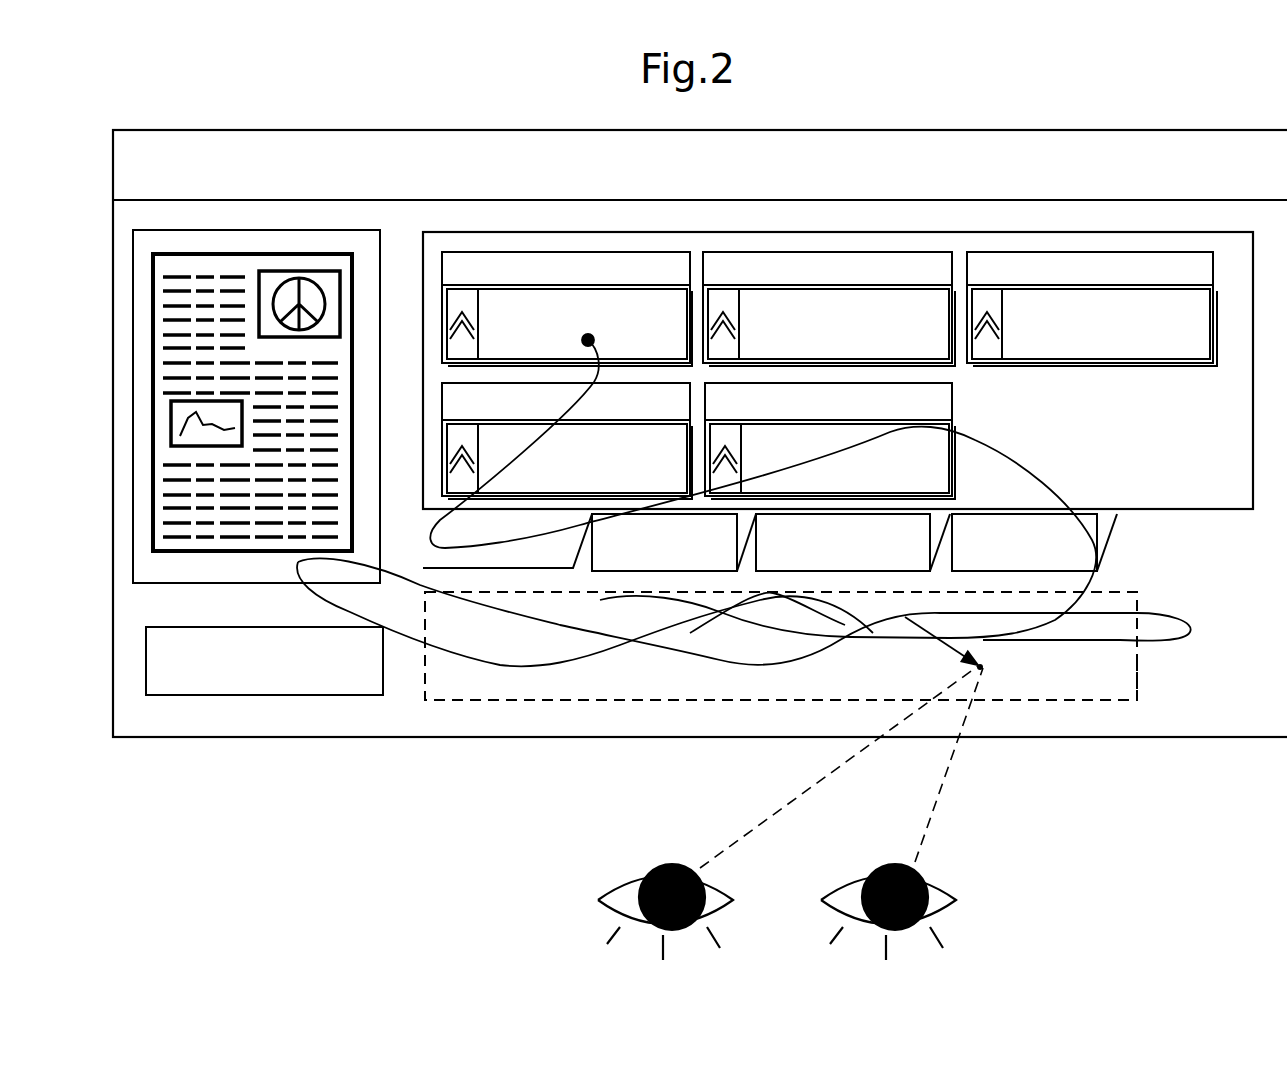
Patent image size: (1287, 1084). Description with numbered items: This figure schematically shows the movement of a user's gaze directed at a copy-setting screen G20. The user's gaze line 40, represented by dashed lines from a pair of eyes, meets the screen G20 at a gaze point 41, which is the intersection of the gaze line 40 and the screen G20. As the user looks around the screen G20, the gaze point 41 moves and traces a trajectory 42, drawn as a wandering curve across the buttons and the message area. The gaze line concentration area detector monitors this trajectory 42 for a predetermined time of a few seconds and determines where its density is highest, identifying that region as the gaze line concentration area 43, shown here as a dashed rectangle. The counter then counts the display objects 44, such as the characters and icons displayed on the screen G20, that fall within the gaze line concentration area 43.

The screen G20 is at (897, 130).
The gaze line 40 is at (893, 740).
The gaze point 41 is at (985, 668).
The trajectory 42 is at (1023, 467).
The gaze line concentration area 43 is at (1143, 688).
The display object 44 is at (1122, 597).